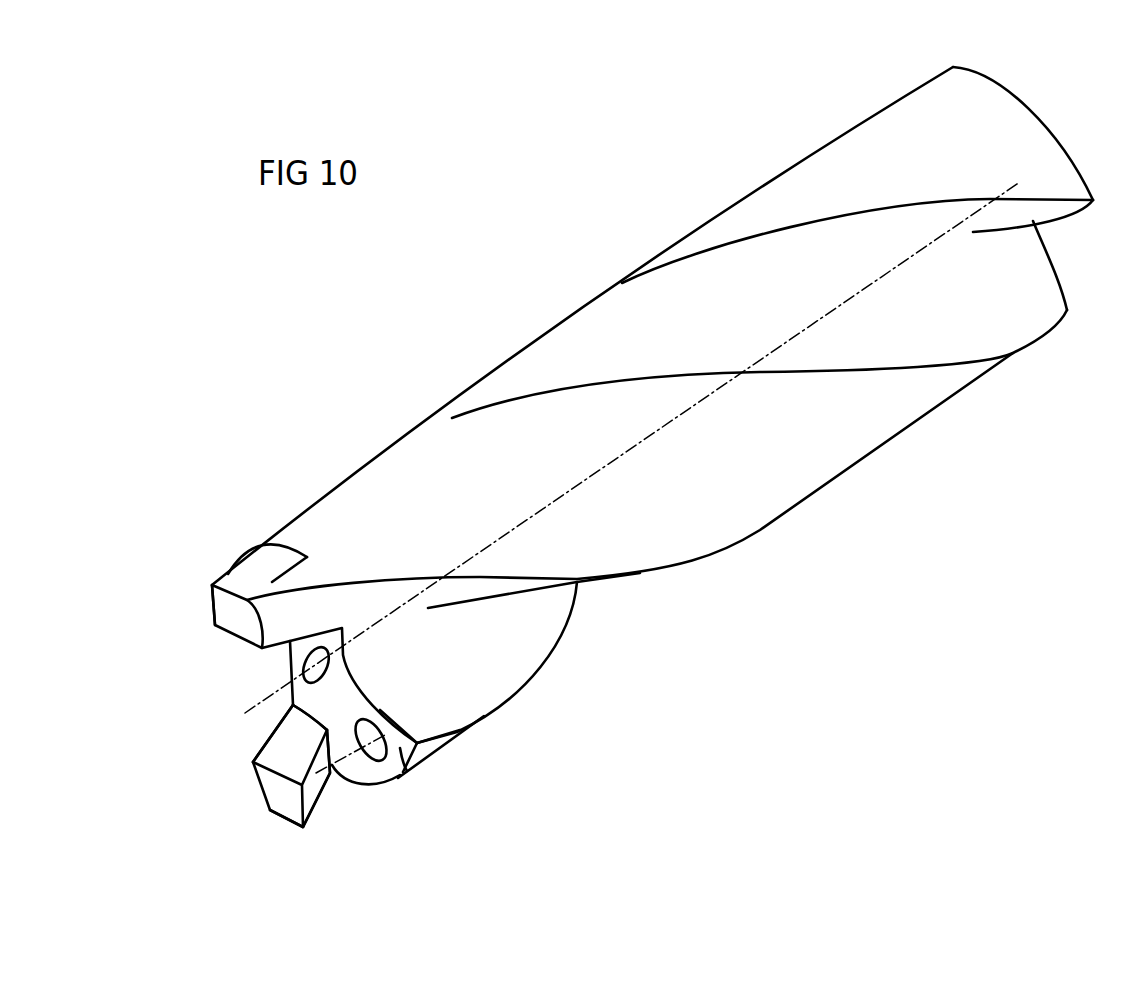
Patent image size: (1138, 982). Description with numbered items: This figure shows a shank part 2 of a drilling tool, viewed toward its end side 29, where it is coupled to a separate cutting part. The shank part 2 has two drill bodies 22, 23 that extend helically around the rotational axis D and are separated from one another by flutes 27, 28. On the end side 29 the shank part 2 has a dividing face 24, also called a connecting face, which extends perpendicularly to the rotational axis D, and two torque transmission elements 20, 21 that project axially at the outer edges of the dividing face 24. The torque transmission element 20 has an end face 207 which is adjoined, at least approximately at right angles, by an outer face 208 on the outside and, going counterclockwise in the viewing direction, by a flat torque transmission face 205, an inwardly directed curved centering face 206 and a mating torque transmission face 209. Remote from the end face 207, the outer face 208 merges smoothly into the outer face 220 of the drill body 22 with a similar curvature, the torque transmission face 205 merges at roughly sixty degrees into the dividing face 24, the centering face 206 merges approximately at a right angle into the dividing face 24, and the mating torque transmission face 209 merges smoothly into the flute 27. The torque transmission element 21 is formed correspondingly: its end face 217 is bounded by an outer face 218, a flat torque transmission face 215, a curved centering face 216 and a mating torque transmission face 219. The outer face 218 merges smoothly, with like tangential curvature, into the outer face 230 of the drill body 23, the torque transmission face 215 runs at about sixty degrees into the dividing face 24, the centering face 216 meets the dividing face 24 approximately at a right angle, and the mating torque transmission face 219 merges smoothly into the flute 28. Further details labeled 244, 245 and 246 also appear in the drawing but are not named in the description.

The shank part 2 is at (688, 602).
The torque transmission element 20 is at (235, 766).
The end face 207 is at (275, 790).
The torque transmission element 21 is at (174, 607).
The end face 217 is at (212, 588).
The drill body 22 is at (862, 166).
The outer face 220 is at (430, 747).
The drill body 23 is at (657, 455).
The outer face 230 is at (446, 488).
The dividing face 24 is at (466, 778).
The end side 29 is at (407, 771).
The flute 27 is at (672, 317).
The flute 28 is at (490, 648).
The torque transmission face 205 is at (315, 783).
The centering face 206 is at (262, 748).
The outer face 208 is at (285, 820).
The mating torque transmission face 209 is at (283, 758).
The torque transmission face 215 is at (232, 580).
The centering face 216 is at (227, 633).
The outer face 218 is at (313, 558).
The mating torque transmission face 219 is at (304, 661).
The coolant channel opening 244 is at (362, 774).
The chamfer edge 245 is at (253, 572).
The neck portion 246 is at (290, 657).
The rotational axis D is at (382, 620).